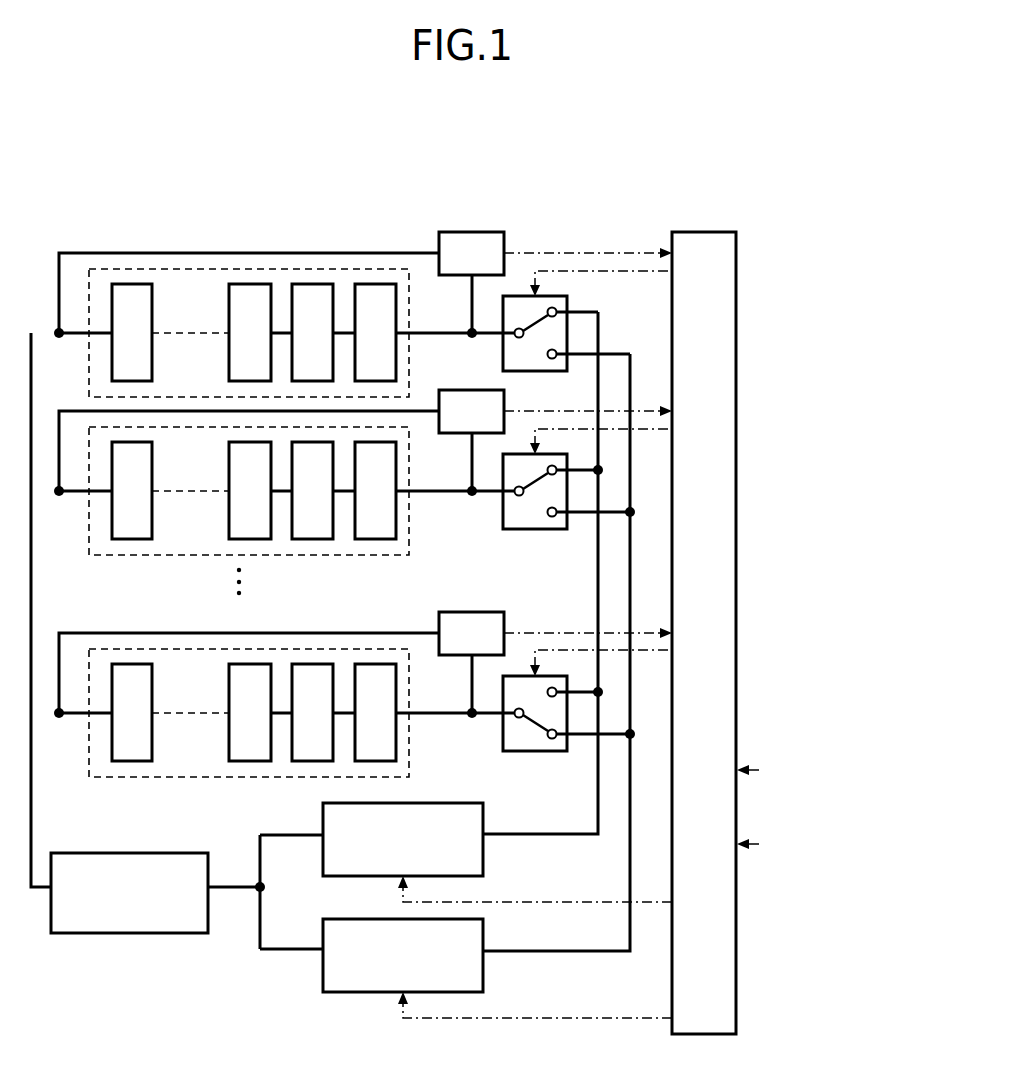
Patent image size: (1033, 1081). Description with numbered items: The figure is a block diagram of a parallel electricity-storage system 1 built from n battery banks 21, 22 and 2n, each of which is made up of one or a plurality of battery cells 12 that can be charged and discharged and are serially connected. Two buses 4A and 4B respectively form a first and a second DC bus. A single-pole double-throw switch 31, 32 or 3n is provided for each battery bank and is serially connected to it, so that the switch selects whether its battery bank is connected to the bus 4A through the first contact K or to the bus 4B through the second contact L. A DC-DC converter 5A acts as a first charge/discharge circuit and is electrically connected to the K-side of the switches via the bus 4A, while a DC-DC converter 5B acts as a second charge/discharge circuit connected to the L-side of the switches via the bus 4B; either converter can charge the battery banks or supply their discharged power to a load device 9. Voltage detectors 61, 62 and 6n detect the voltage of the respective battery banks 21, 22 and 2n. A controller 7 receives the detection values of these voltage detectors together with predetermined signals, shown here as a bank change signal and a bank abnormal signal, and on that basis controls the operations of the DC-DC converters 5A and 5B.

The parallel electricity-storage system 1 is at (298, 164).
The battery bank 21 is at (89, 383).
The battery bank 22 is at (89, 541).
The battery bank 2n is at (89, 763).
The single-pole double-throw switch 31 is at (535, 371).
The single-pole double-throw switch 32 is at (535, 529).
The single-pole double-throw switch 3n is at (535, 751).
The bus 4A is at (565, 834).
The bus 4B is at (585, 951).
The DC-DC converter 5A is at (323, 808).
The DC-DC converter 5B is at (323, 988).
The voltage detector 61 is at (451, 232).
The voltage detector 62 is at (451, 390).
The voltage detector 6n is at (451, 612).
The controller 7 is at (709, 232).
The load device 9 is at (178, 836).
The battery cell 12 is at (152, 291).